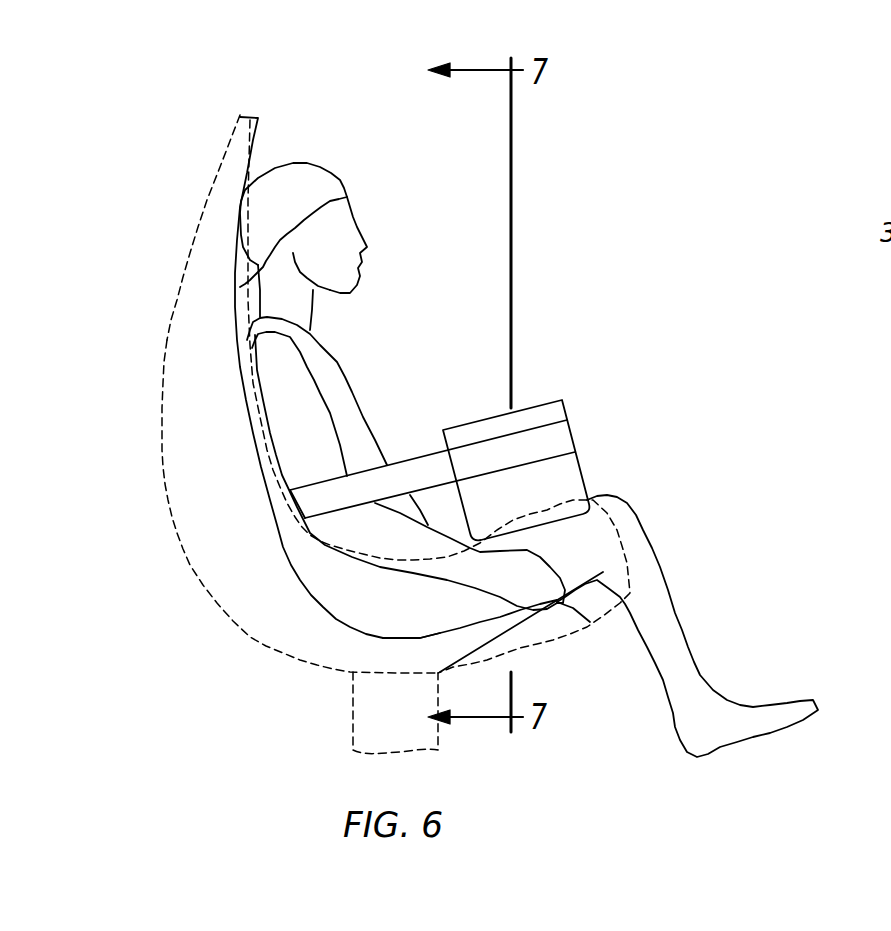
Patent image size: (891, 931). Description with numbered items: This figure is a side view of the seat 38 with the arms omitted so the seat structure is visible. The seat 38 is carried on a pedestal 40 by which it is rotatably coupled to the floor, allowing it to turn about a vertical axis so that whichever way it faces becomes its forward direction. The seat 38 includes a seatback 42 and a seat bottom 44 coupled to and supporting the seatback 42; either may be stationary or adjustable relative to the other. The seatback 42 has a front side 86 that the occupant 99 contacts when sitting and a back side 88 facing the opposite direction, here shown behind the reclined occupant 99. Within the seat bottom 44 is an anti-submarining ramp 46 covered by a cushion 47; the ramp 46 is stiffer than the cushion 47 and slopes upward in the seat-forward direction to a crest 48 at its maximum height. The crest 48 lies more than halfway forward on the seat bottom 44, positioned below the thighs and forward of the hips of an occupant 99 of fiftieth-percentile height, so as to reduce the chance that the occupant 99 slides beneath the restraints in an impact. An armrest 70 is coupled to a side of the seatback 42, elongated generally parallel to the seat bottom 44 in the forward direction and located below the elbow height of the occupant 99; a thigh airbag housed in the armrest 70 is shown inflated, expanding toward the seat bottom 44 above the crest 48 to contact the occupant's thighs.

The seat 38 is at (205, 175).
The seatback 42 is at (185, 262).
The back side 88 is at (167, 340).
The front side 86 is at (347, 197).
The occupant 99 is at (340, 360).
The armrest 70 is at (407, 459).
The crest 48 is at (557, 597).
The cushion 47 is at (420, 638).
The anti-submarining ramp 46 is at (493, 647).
The seat bottom 44 is at (553, 640).
The pedestal 40 is at (353, 723).